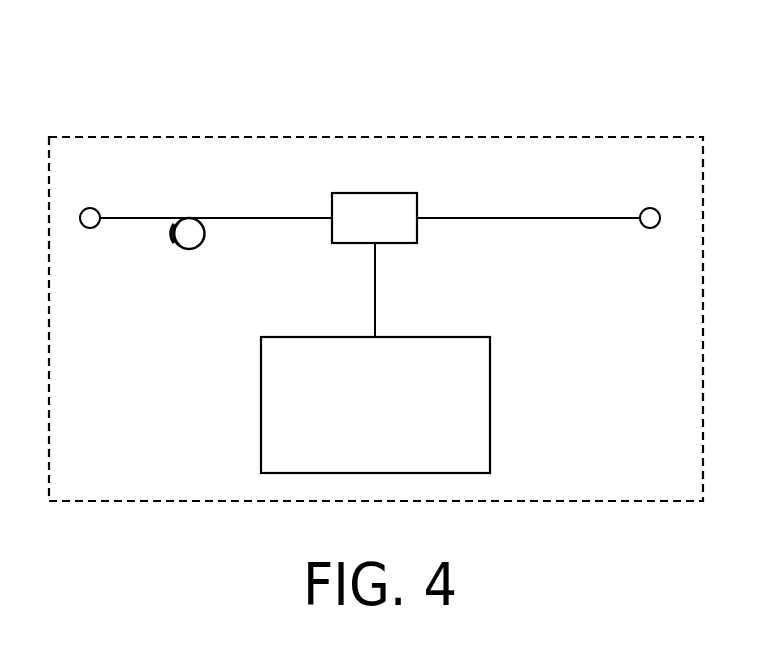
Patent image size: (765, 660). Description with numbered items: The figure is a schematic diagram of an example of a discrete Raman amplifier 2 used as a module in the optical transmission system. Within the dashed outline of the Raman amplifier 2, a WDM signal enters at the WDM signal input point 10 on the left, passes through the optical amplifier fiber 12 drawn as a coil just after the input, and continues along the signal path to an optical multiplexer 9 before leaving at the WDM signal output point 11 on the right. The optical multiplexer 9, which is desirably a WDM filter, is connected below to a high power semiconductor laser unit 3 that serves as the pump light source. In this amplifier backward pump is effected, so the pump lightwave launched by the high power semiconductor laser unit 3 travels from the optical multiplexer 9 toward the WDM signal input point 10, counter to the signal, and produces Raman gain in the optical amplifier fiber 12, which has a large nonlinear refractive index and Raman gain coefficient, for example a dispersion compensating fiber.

The Raman amplifier 2 is at (605, 137).
The high power semiconductor laser unit 3 is at (462, 337).
The optical multiplexer 9 is at (400, 243).
The WDM signal input point 10 is at (90, 228).
The WDM signal output point 11 is at (650, 228).
The optical amplifier fiber 12 is at (188, 249).